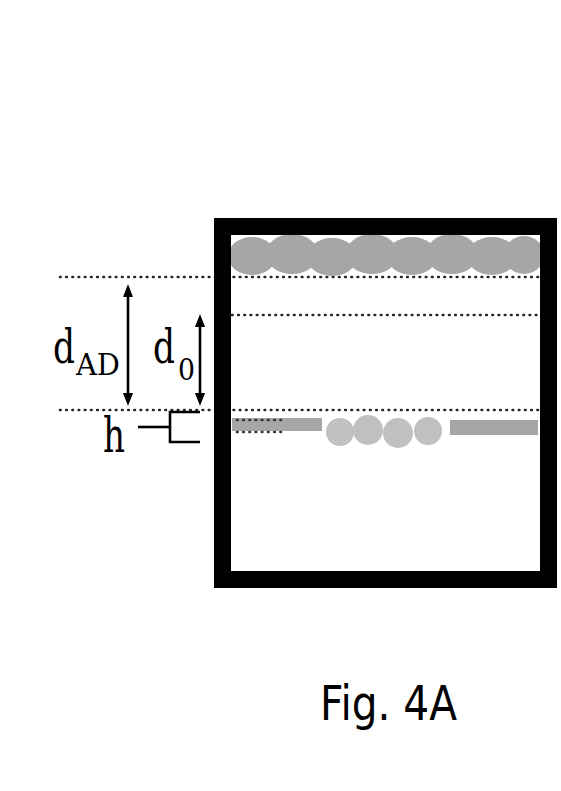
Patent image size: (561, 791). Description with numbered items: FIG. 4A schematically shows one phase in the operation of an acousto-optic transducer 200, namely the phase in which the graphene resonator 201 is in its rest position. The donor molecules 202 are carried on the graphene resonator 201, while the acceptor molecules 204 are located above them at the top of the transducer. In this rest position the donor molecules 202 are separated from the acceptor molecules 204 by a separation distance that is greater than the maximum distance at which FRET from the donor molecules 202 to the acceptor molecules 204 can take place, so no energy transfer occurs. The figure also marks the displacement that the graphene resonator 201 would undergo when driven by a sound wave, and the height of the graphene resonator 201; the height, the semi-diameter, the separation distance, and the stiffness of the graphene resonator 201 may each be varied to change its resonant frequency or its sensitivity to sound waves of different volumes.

The acousto-optic transducer 200 is at (262, 134).
The graphene resonator 201 is at (513, 435).
The donor molecules 202 is at (337, 430).
The acceptor molecules 204 is at (402, 256).